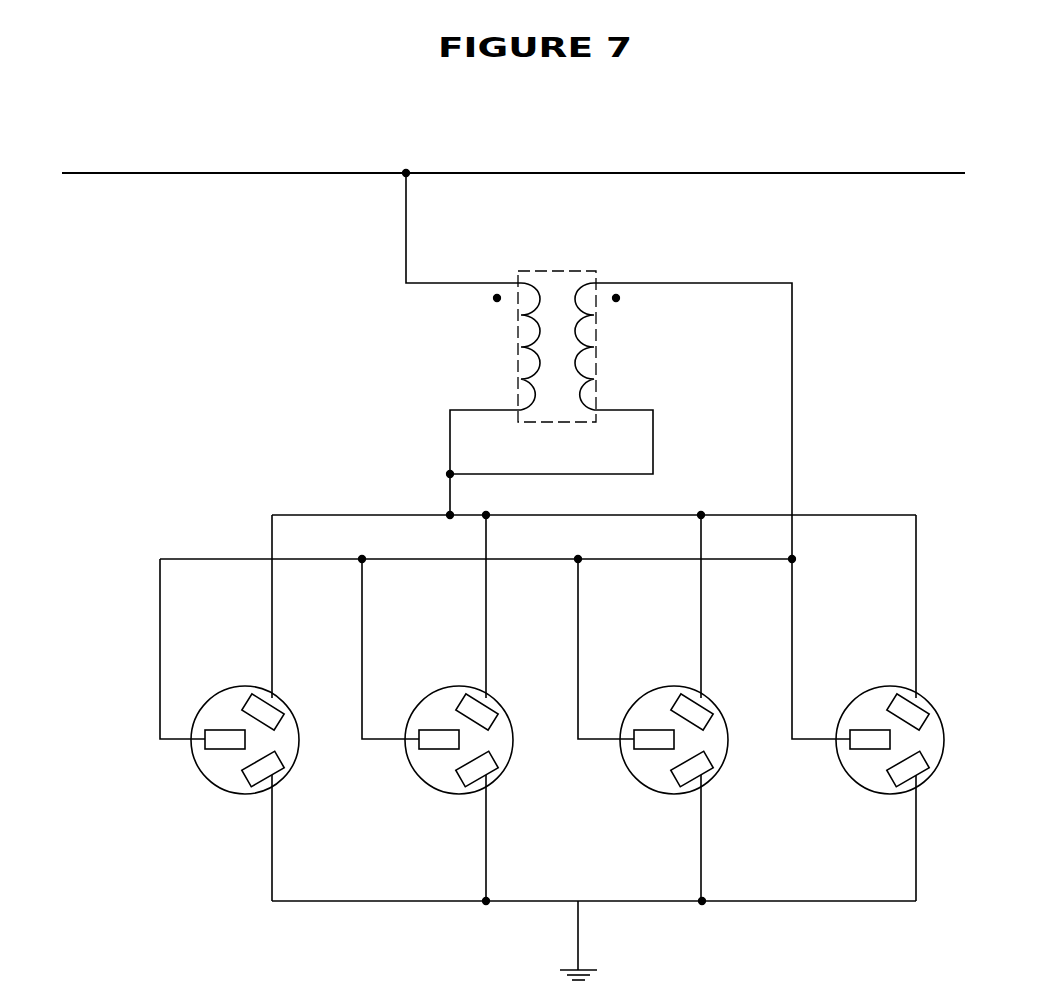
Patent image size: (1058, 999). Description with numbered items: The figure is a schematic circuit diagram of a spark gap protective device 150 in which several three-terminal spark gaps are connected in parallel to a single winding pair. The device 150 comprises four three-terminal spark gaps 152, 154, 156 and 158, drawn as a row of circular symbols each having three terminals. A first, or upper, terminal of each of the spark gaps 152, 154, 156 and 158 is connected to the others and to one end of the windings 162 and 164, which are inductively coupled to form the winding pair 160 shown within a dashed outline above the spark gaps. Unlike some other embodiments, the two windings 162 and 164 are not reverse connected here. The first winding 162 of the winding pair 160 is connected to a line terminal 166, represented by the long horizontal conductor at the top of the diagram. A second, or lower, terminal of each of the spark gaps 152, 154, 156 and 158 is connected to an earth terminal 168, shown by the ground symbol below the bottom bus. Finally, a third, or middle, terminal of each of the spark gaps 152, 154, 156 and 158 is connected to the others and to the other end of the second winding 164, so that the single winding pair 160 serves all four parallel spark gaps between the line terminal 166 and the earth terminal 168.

The spark gap protective device 150 is at (513, 537).
The three-terminal spark gap 152 is at (185, 762).
The three-terminal spark gap 154 is at (405, 762).
The three-terminal spark gap 156 is at (620, 762).
The three-terminal spark gap 158 is at (838, 762).
The winding pair 160 is at (557, 315).
The first winding 162 is at (454, 346).
The second winding 164 is at (660, 346).
The line terminal 166 is at (513, 144).
The earth terminal 168 is at (517, 940).